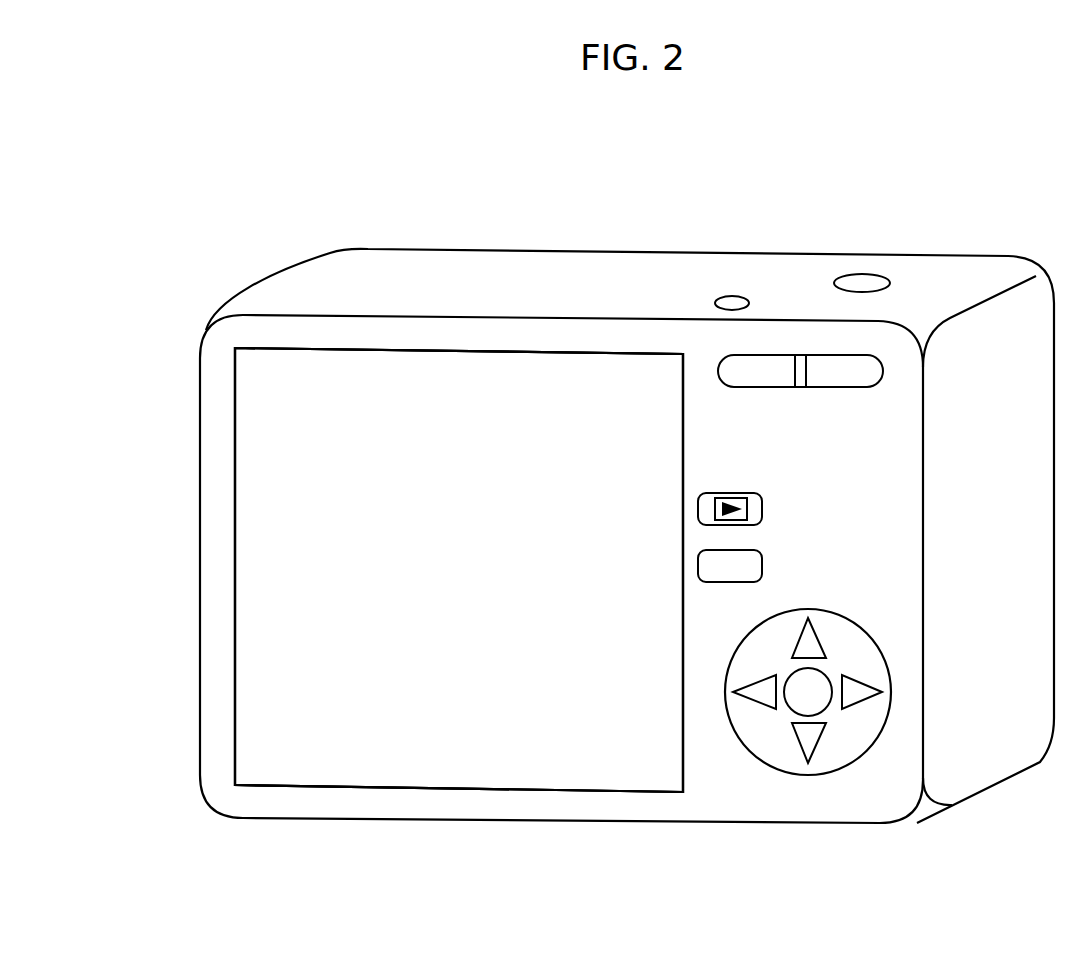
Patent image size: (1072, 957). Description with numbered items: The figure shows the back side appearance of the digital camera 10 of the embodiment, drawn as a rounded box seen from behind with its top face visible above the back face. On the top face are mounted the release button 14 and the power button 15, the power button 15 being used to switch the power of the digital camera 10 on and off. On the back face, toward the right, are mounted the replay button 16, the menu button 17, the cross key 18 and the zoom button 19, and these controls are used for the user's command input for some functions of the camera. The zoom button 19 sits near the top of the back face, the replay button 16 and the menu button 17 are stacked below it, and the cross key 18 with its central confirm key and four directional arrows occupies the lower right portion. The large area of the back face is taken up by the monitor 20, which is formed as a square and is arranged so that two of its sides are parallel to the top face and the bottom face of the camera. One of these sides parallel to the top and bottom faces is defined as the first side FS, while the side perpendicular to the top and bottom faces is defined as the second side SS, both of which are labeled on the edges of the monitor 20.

The digital camera 10 is at (562, 252).
The release button 14 is at (863, 274).
The power button 15 is at (732, 296).
The replay button 16 is at (763, 509).
The menu button 17 is at (763, 567).
The cross key 18 is at (792, 773).
The zoom button 19 is at (838, 388).
The monitor 20 is at (450, 792).
The first side FS is at (458, 354).
The second side SS is at (237, 566).